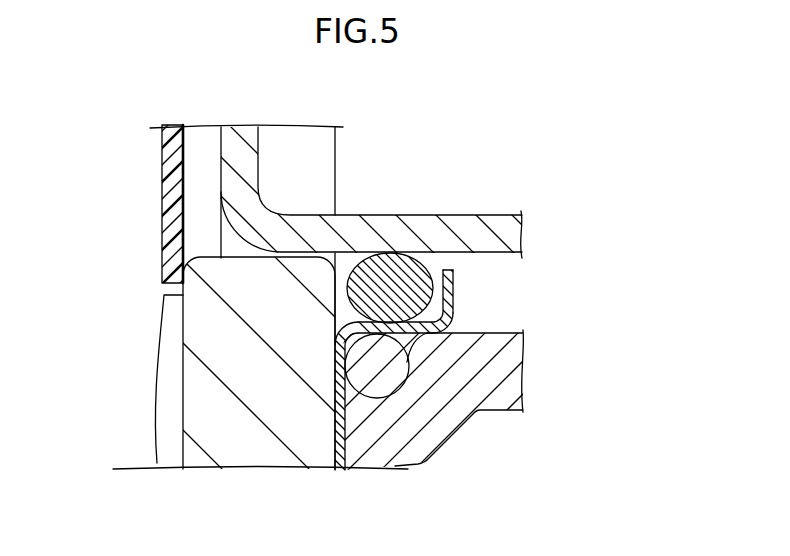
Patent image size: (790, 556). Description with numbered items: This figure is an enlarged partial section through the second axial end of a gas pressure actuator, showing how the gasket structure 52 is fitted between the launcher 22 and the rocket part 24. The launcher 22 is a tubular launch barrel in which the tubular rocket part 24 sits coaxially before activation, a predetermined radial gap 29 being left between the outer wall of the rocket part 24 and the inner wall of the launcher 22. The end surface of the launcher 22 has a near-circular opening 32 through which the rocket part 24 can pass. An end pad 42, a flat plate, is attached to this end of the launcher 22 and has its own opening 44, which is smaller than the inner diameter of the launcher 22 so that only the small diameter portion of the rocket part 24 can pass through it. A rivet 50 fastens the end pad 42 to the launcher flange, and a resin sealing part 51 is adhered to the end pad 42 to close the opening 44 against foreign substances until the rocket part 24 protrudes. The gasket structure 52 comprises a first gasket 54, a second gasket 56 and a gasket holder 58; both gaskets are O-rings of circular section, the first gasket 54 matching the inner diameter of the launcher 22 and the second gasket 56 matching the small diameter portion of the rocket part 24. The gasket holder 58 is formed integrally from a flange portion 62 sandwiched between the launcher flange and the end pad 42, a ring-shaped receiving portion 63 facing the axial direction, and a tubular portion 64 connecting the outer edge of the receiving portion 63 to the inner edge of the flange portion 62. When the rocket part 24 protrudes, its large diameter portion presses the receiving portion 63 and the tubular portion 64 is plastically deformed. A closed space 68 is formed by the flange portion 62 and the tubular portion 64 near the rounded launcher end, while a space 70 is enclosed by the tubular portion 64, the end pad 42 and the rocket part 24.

The launcher 22 is at (502, 403).
The rocket part 24 is at (259, 173).
The gap 29 is at (511, 258).
The opening 32 is at (412, 350).
The end pad 42 is at (183, 330).
The opening 44 is at (232, 243).
The rivet 50 is at (157, 386).
The sealing part 51 is at (162, 159).
The gasket structure 52 is at (487, 165).
The first gasket 54 is at (438, 268).
The second gasket 56 is at (387, 255).
The gasket holder 58 is at (457, 268).
The flange portion 62 is at (335, 425).
The receiving portion 63 is at (456, 294).
The tubular portion 64 is at (441, 333).
The closed space 68 is at (357, 407).
The space 70 is at (344, 265).